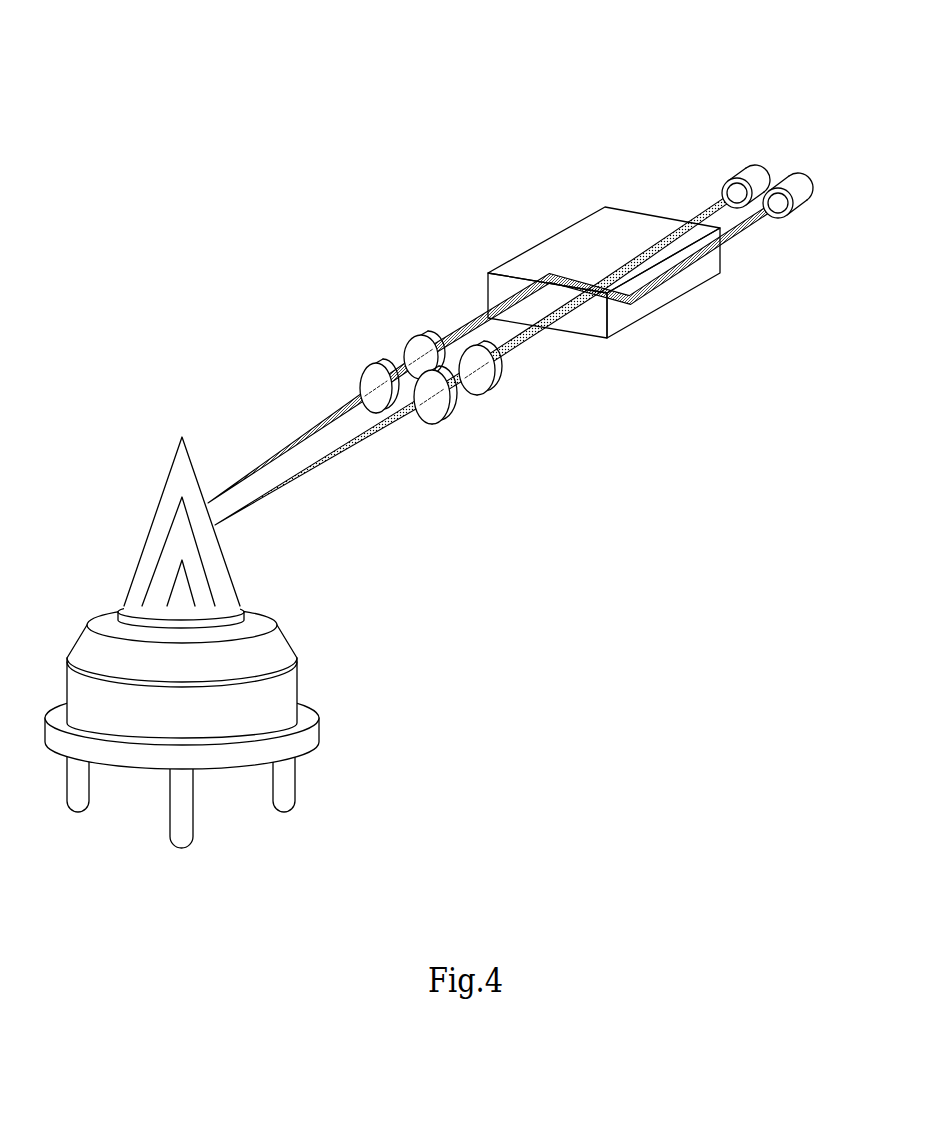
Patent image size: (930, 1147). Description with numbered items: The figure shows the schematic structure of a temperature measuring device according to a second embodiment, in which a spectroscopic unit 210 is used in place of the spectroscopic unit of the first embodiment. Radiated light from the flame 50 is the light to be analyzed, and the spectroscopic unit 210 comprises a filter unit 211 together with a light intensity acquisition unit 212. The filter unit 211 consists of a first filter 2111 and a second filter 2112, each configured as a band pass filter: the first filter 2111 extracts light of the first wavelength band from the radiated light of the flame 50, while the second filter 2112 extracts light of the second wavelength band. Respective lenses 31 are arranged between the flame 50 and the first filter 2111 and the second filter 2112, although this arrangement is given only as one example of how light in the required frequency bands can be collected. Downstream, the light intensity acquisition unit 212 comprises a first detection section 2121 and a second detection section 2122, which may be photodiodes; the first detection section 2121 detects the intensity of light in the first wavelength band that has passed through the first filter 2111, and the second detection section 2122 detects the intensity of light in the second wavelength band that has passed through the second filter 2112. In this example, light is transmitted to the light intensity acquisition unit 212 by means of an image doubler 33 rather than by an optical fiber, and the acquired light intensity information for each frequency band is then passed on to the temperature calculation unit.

The flame 50 is at (153, 516).
The lenses 31 is at (376, 363).
The image doubler 33 is at (667, 304).
The spectroscopic unit 210 is at (580, 206).
The filter unit 211 is at (505, 237).
The first filter 2111 is at (487, 344).
The second filter 2112 is at (421, 335).
The light intensity acquisition unit 212 is at (802, 77).
The first detection section 2121 is at (745, 170).
The second detection section 2122 is at (792, 176).